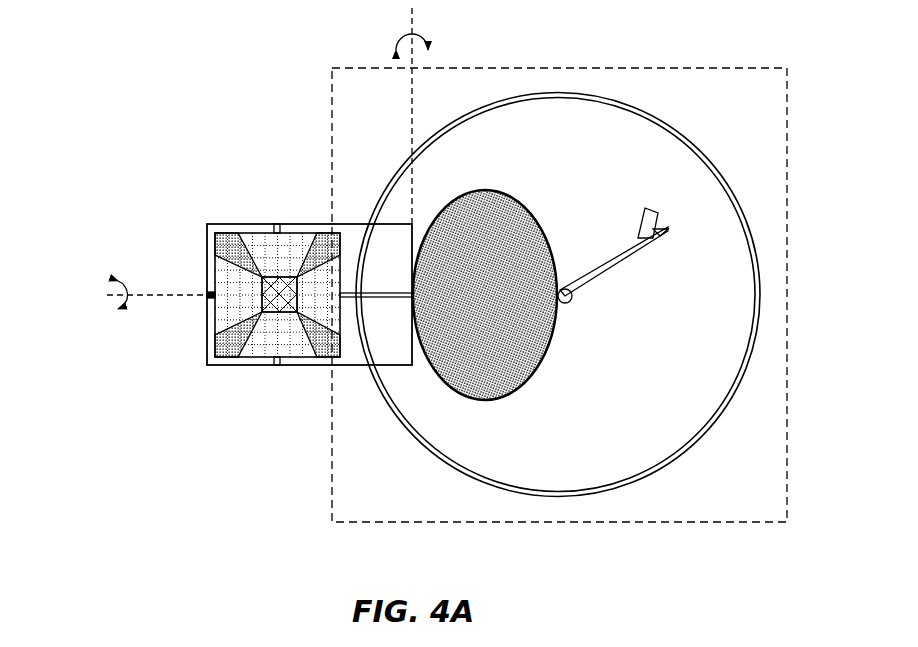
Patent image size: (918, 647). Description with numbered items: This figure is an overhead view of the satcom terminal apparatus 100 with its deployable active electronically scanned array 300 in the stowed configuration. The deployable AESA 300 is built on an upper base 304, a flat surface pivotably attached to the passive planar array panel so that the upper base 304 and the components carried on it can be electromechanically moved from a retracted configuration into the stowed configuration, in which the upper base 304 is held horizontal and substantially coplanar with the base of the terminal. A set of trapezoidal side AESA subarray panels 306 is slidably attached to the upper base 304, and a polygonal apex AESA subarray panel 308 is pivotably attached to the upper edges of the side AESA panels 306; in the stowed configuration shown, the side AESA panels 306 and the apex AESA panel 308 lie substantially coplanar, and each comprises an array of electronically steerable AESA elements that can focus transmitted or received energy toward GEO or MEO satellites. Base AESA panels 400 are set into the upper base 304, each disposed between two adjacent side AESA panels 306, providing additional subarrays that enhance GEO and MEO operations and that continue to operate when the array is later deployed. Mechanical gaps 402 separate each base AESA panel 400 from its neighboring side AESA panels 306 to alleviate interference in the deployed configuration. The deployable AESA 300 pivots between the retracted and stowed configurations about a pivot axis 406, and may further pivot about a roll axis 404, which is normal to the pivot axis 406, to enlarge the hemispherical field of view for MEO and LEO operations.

The satcom terminal apparatus 100 is at (157, 31).
The deployable active electronically scanned array 300 is at (141, 177).
The upper base 304 is at (207, 257).
The side AESA subarray panels 306 is at (275, 333).
The apex AESA subarray panel 308 is at (265, 277).
The base AESA panels 400 is at (222, 352).
The mechanical gaps 402 is at (215, 250).
The roll axis 404 is at (163, 298).
The pivot axis 406 is at (412, 133).